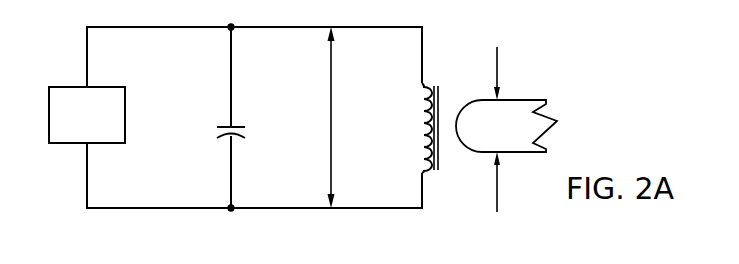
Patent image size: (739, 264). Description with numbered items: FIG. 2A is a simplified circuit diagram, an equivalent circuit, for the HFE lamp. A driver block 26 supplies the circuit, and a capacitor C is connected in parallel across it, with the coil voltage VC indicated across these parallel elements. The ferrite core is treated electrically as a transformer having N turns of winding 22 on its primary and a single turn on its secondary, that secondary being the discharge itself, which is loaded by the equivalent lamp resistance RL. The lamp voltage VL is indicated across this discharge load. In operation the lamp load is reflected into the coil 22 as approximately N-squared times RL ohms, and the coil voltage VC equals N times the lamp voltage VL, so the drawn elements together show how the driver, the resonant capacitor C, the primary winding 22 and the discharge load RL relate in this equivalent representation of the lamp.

The HFE driver 26 is at (64, 87).
The winding 22 is at (426, 82).
The capacitor C is at (245, 130).
The coil voltage VC is at (332, 131).
The equivalent lamp resistance RL is at (557, 131).
The lamp voltage VL is at (497, 129).